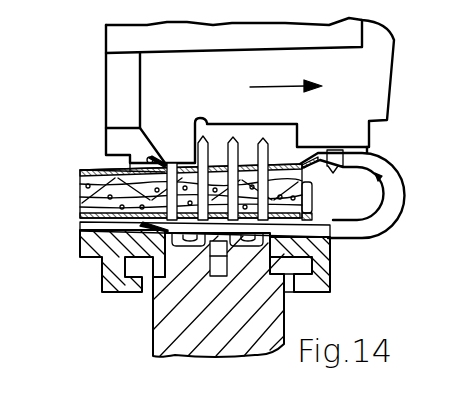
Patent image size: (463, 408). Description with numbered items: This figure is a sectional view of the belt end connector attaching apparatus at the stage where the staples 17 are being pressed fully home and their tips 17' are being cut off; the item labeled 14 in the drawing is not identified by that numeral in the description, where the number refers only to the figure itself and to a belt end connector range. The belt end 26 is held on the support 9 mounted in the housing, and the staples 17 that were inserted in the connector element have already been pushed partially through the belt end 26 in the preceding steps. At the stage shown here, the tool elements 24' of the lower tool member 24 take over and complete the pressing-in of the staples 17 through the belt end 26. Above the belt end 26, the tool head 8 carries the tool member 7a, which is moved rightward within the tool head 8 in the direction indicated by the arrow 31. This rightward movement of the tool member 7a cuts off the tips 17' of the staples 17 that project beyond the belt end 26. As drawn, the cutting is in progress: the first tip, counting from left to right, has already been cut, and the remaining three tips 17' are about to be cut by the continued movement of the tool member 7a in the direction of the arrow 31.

The tool head 8 is at (389, 72).
The tool member 7a is at (182, 157).
The arrow 31 is at (280, 87).
The resilient strap loop 14 is at (393, 201).
The belt end 26 is at (87, 192).
The staples 17 is at (114, 155).
The tips 17' is at (253, 157).
The support 9 is at (322, 251).
The lower tool member 24 is at (198, 295).
The tool elements 24' is at (220, 291).